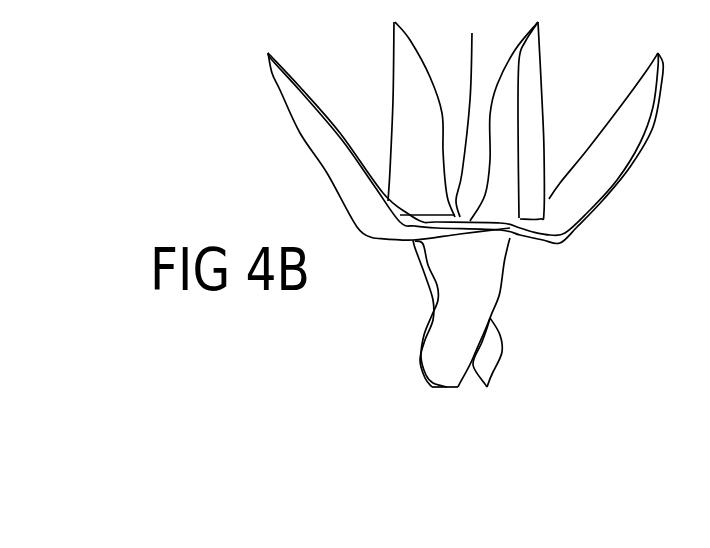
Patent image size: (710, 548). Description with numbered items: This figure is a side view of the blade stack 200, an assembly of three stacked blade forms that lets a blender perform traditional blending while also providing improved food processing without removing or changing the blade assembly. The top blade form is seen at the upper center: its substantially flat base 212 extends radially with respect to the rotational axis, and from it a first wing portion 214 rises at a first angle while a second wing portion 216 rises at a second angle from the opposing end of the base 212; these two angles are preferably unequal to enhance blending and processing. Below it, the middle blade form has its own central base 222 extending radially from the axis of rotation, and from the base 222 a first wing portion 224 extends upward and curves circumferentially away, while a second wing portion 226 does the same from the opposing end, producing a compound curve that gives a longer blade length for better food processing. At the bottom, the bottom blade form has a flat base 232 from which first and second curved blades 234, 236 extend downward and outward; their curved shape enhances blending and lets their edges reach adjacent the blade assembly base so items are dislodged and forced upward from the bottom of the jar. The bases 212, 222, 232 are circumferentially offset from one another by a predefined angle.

The blade stack 200 is at (338, 316).
The base 212 is at (467, 110).
The first wing portion 214 is at (535, 62).
The second wing portion 216 is at (405, 63).
The central base 222 is at (514, 237).
The first wing portion 224 is at (630, 128).
The second wing portion 226 is at (307, 120).
The base 232 is at (415, 240).
The first curved blade 234 is at (477, 330).
The second curved blade 236 is at (487, 358).